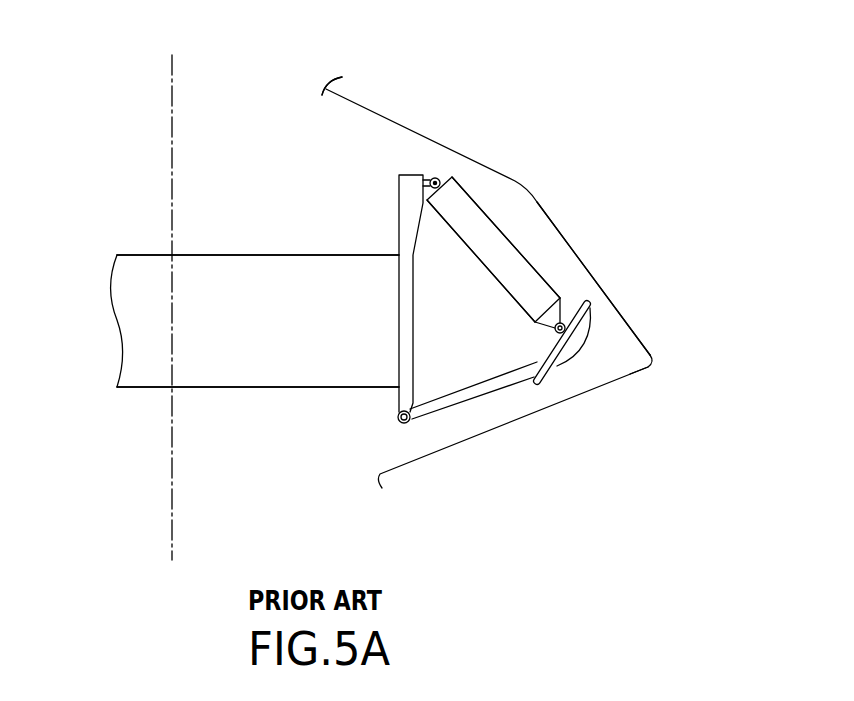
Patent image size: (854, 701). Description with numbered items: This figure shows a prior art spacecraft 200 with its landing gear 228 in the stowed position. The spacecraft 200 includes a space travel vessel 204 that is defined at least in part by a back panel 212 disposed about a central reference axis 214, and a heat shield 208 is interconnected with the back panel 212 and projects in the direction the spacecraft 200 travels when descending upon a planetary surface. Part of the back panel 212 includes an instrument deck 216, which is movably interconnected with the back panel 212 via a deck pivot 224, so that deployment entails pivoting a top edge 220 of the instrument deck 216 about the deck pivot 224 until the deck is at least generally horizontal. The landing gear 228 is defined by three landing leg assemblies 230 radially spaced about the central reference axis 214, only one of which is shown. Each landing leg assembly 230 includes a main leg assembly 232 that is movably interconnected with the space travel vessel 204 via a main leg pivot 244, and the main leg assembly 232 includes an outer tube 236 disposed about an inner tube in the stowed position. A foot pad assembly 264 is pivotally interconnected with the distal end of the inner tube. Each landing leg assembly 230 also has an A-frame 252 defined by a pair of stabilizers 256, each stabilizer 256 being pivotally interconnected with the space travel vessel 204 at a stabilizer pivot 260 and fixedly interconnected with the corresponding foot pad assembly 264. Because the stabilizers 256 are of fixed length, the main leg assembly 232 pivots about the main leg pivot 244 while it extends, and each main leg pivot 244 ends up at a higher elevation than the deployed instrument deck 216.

The spacecraft 200 is at (455, 74).
The space travel vessel 204 is at (654, 362).
The heat shield 208 is at (458, 442).
The back panel 212 is at (620, 313).
The central reference axis 214 is at (172, 488).
The instrument deck 216 is at (128, 287).
The top edge 220 is at (146, 255).
The deck pivot 224 is at (137, 387).
The landing gear 228 is at (531, 230).
The landing leg assembly 230 is at (499, 195).
The main leg assembly 232 is at (548, 278).
The outer tube 236 is at (470, 252).
The main leg pivot 244 is at (438, 178).
The A-frame 252 is at (500, 408).
The stabilizer 256 is at (462, 385).
The stabilizer pivot 260 is at (397, 421).
The foot pad assembly 264 is at (561, 365).